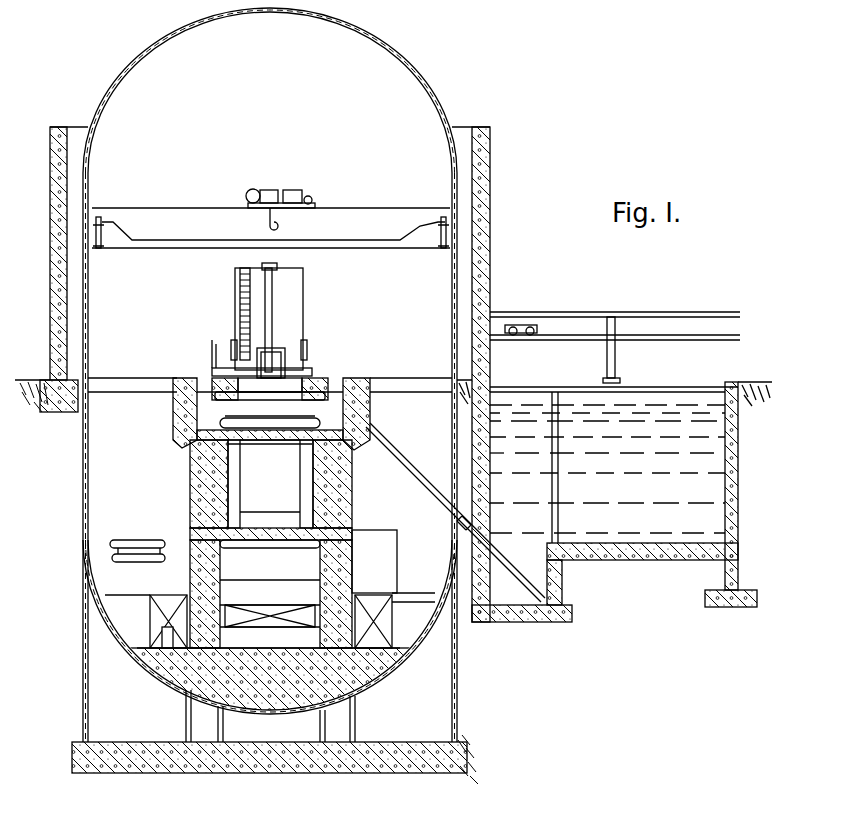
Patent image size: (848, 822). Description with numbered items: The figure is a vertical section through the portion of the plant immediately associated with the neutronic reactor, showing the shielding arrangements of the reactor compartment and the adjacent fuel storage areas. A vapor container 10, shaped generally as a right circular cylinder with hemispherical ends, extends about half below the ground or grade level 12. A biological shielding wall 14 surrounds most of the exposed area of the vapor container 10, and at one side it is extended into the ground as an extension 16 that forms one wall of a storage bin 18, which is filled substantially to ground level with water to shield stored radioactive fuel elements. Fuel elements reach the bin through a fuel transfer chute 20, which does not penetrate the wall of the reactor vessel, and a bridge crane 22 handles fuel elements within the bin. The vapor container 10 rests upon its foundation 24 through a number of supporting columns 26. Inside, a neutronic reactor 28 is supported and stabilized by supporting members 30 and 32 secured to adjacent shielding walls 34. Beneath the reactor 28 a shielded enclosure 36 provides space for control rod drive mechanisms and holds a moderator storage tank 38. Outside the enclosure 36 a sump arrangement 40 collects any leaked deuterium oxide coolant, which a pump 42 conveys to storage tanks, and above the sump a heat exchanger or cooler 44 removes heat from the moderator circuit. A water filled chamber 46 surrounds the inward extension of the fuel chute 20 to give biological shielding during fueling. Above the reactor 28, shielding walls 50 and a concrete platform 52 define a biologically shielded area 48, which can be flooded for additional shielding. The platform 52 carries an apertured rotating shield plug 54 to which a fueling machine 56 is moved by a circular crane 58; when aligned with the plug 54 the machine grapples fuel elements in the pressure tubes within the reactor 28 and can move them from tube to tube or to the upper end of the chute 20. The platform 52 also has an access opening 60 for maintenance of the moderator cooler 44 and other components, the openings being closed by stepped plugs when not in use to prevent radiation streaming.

The vapor container 10 is at (379, 36).
The ground or grade level 12 is at (28, 380).
The biological shielding wall 14 is at (489, 196).
The extension of shielding wall 16 is at (614, 465).
The storage bin 18 is at (738, 493).
The fuel transfer chute 20 is at (518, 570).
The bridge crane 22 is at (522, 325).
The foundation 24 is at (420, 773).
The supporting columns 26 is at (88, 723).
The neutronic reactor 28 is at (270, 481).
The supporting member 30 is at (306, 440).
The supporting member 32 is at (306, 512).
The shielding walls 34 is at (200, 500).
The shielded enclosure 36 is at (243, 563).
The moderator storage tank 38 is at (294, 590).
The sump arrangement 40 is at (396, 611).
The pump 42 is at (162, 634).
The heat exchanger or cooler 44 is at (142, 566).
The water filled chamber 46 is at (446, 480).
The biologically shielded area 48 is at (327, 408).
The shielding walls 50 is at (360, 384).
The concrete platform 52 is at (316, 366).
The apertured rotating shield plug 54 is at (208, 386).
The fueling machine 56 is at (303, 290).
The circular crane 58 is at (178, 208).
The access opening 60 is at (132, 378).